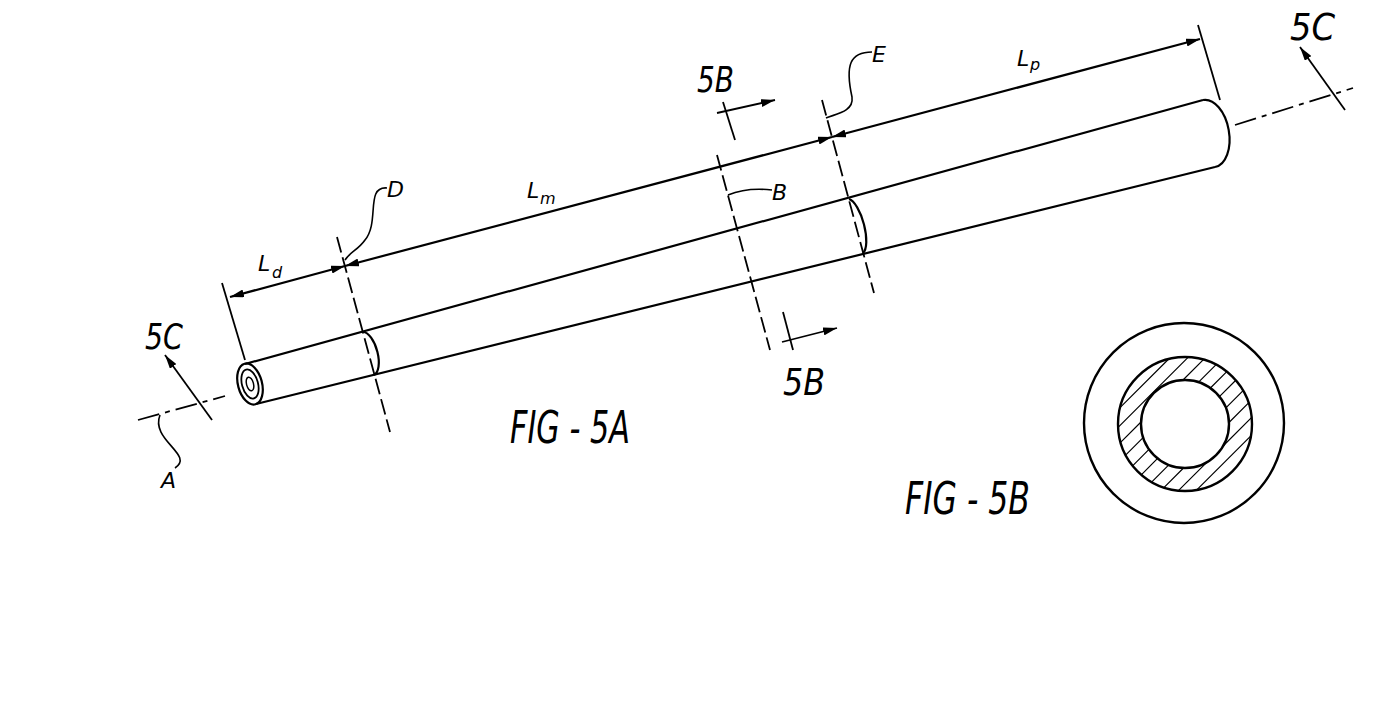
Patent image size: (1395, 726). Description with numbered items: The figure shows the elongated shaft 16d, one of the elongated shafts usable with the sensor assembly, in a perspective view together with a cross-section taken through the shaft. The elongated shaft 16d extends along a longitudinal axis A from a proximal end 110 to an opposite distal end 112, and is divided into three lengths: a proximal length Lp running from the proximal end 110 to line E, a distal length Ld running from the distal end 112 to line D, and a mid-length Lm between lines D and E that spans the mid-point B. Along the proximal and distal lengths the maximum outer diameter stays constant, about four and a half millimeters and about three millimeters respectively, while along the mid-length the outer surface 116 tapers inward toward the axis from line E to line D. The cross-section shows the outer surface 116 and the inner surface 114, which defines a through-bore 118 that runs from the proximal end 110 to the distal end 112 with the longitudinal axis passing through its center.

In FIG. 5A, the elongated shaft 16d is at (316, 150).
In FIG. 5B, the elongated shaft 16d is at (1046, 408).
In FIG. 5A, the proximal end 110 is at (1230, 143).
In FIG. 5A, the distal end 112 is at (262, 398).
In FIG. 5A, the inner surface 114 is at (240, 375).
In FIG. 5A, the outer surface 116 is at (960, 215).
In FIG. 5B, the outer surface 116 is at (1177, 512).
In FIG. 5A, the through-bore 118 is at (248, 407).
In FIG. 5B, the through-bore 118 is at (1222, 399).